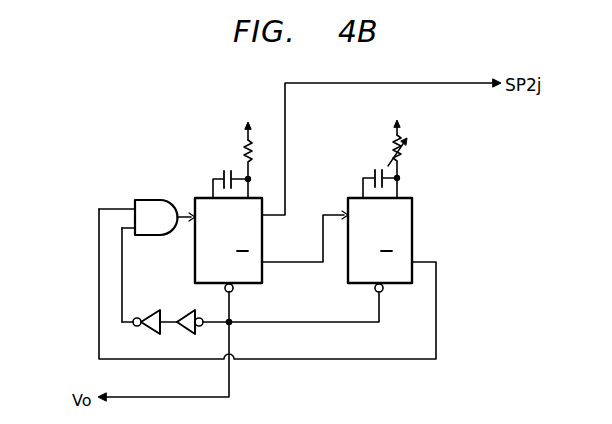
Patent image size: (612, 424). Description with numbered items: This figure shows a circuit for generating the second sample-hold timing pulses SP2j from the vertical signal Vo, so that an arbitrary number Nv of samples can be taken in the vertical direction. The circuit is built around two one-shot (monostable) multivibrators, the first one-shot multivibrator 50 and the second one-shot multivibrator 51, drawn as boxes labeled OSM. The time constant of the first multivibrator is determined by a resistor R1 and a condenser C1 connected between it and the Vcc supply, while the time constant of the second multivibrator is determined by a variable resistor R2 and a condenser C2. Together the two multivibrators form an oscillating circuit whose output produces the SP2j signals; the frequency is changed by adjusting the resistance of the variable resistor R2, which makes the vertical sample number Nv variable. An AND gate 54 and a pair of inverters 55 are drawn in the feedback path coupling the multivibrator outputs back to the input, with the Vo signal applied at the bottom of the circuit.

The one-shot multivibrator 50 is at (263, 240).
The one-shot multivibrator 51 is at (413, 240).
The AND gate 54 is at (151, 198).
The inverters 55 is at (183, 311).
The resistor R1 is at (255, 150).
The condenser C1 is at (230, 174).
The variable resistor R2 is at (404, 150).
The condenser C2 is at (379, 174).